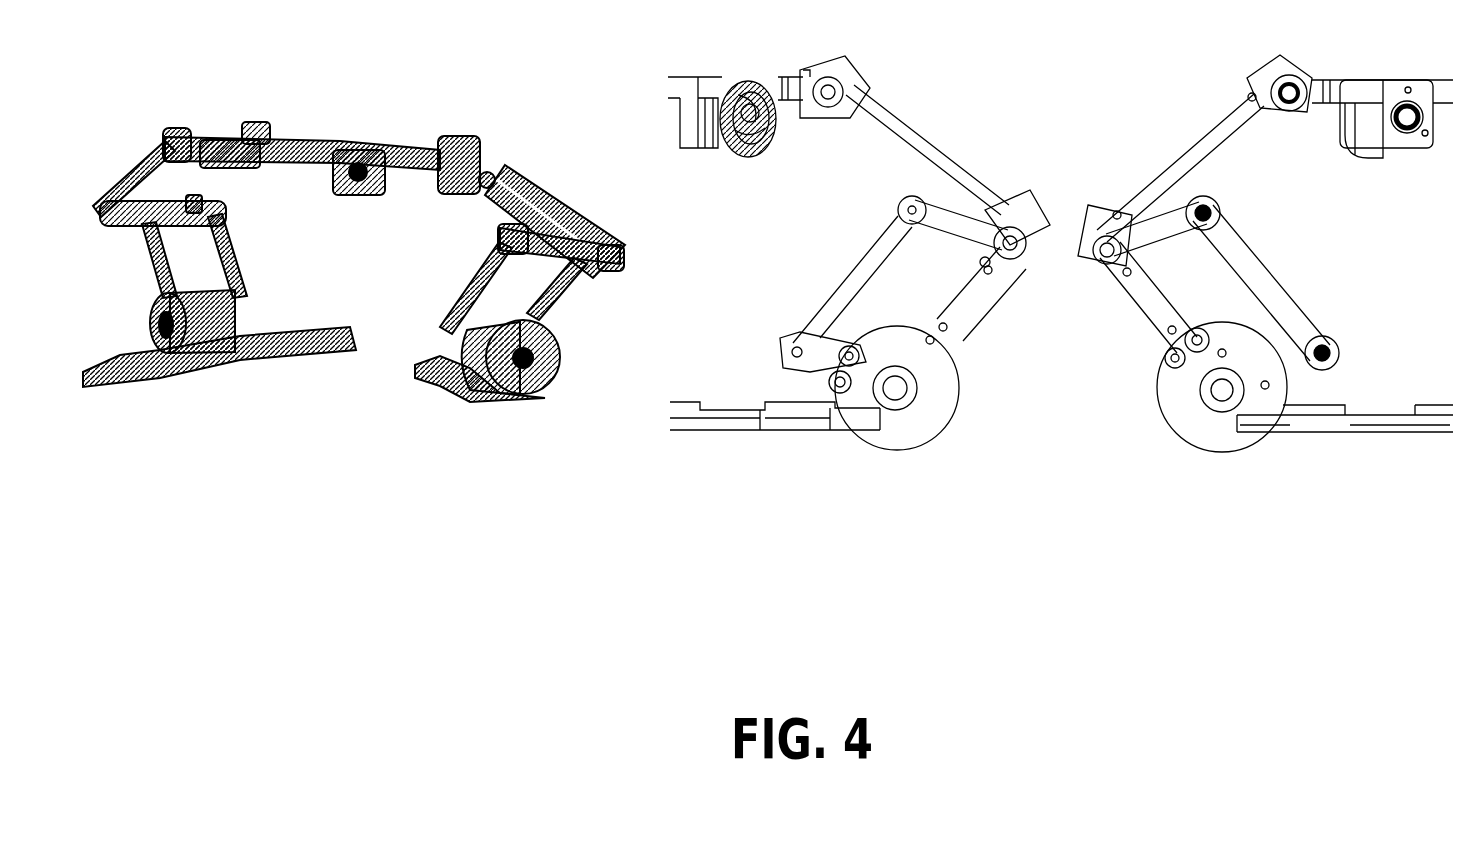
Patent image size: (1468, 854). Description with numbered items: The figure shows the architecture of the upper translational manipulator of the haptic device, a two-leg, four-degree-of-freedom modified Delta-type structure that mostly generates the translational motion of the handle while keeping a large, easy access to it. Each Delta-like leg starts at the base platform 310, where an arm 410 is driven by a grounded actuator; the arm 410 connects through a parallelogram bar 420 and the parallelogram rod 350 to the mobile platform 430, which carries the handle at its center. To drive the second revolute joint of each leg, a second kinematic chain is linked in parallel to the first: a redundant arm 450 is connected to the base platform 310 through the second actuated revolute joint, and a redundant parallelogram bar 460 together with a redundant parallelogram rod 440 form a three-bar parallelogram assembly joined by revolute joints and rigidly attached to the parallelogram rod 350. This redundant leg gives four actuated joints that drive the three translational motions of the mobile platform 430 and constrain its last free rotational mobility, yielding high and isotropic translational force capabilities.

The base platform 310 is at (1393, 426).
The parallelogram rod 350 is at (833, 90).
The arm 410 is at (1155, 305).
The parallelogram bar 420 is at (1201, 143).
The mobile platform 430 is at (1370, 137).
The redundant parallelogram rod 440 is at (968, 234).
The redundant arm 450 is at (940, 395).
The redundant parallelogram bar 460 is at (1257, 280).